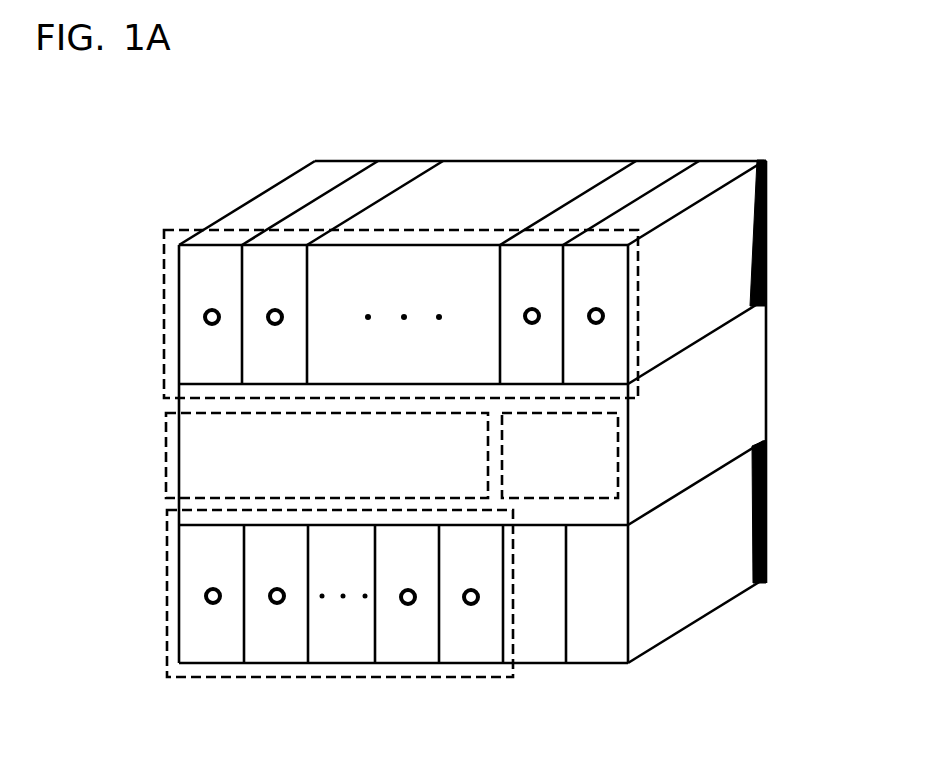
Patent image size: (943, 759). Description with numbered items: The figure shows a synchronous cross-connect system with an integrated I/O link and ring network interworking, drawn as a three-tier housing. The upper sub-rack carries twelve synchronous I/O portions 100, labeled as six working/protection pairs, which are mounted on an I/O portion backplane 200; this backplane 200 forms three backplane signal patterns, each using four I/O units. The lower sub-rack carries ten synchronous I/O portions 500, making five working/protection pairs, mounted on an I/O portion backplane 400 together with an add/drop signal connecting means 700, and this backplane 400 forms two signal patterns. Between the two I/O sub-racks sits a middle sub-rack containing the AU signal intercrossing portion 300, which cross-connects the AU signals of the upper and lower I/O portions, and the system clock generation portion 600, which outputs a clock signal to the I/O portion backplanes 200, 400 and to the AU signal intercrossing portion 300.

The synchronous STM-16 I/O portions 100 is at (164, 303).
The I/O portion backplane 200 is at (767, 225).
The AU signal intercrossing portion 300 is at (166, 456).
The I/O portion backplane 400 is at (767, 513).
The synchronous STM-16 I/O portions 500 is at (167, 594).
The system clock generation portion 600 is at (618, 449).
The add/drop signal connecting means 700 is at (582, 655).